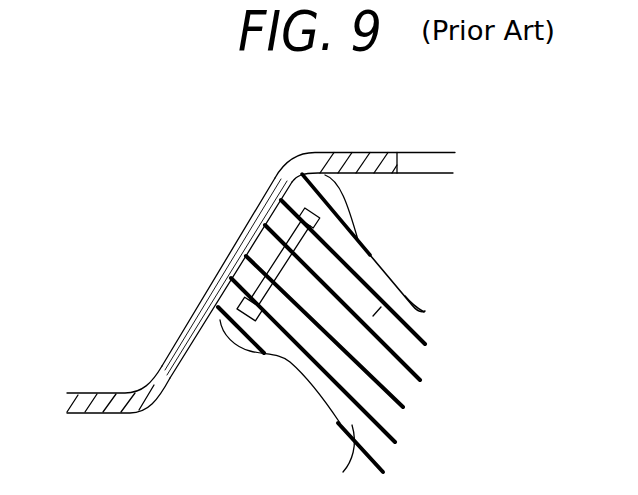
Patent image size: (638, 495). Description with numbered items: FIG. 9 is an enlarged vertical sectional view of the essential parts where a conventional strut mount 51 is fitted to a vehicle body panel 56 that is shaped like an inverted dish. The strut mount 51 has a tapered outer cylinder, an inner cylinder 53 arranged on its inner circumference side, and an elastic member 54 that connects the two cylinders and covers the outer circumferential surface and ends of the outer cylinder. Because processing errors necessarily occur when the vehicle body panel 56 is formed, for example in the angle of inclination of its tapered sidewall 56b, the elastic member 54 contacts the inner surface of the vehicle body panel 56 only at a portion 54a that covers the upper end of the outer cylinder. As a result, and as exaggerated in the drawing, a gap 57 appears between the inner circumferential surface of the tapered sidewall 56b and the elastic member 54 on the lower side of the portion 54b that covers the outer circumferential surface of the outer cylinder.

The strut mount 51 is at (452, 288).
The inner cylinder 53 is at (303, 250).
The elastic member 54 is at (392, 289).
The portion covering the upper end of the outer cylinder 54a is at (330, 153).
The portion covering the outer circumferential surface of the outer cylinder 54b is at (240, 239).
The vehicle body panel 56 is at (82, 390).
The tapered sidewall 56b is at (214, 267).
The gap 57 is at (222, 314).